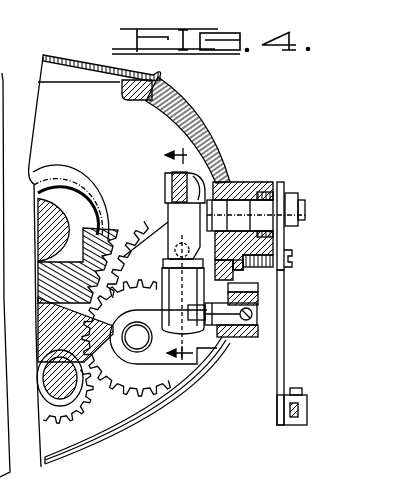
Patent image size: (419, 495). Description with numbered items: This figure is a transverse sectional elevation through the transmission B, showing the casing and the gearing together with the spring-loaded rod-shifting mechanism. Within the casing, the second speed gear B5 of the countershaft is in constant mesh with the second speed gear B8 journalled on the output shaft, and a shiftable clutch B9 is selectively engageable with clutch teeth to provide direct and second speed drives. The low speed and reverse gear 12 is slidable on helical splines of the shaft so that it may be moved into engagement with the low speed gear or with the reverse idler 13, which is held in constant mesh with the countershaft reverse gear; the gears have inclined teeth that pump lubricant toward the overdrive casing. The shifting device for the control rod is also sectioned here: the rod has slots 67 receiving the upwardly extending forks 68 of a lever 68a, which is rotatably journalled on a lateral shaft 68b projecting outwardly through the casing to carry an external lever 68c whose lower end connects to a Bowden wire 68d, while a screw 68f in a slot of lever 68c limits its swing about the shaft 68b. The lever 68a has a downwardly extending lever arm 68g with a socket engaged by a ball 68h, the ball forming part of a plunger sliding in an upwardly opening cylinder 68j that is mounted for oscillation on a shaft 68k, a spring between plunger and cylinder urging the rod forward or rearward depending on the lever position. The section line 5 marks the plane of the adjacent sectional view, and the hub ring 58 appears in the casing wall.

The transmission B is at (70, 56).
The second speed gear B8 is at (37, 285).
The second speed gear B5 is at (36, 320).
The shiftable clutch B9 is at (53, 422).
The hub ring 58 is at (108, 148).
The slots 67 is at (215, 160).
The forks 68 is at (232, 182).
The lever 68a is at (163, 205).
The lateral shaft 68b is at (281, 183).
The lever 68c is at (285, 300).
The Bowden wire 68d is at (284, 424).
The screw 68f is at (287, 258).
The lever arm 68g is at (163, 218).
The ball 68h is at (183, 296).
The cylinder 68j is at (185, 297).
The shaft 68k is at (223, 338).
The low speed and reverse gear 12 is at (136, 250).
The reverse idler 13 is at (143, 400).
The section line 5- 5 is at (165, 257).